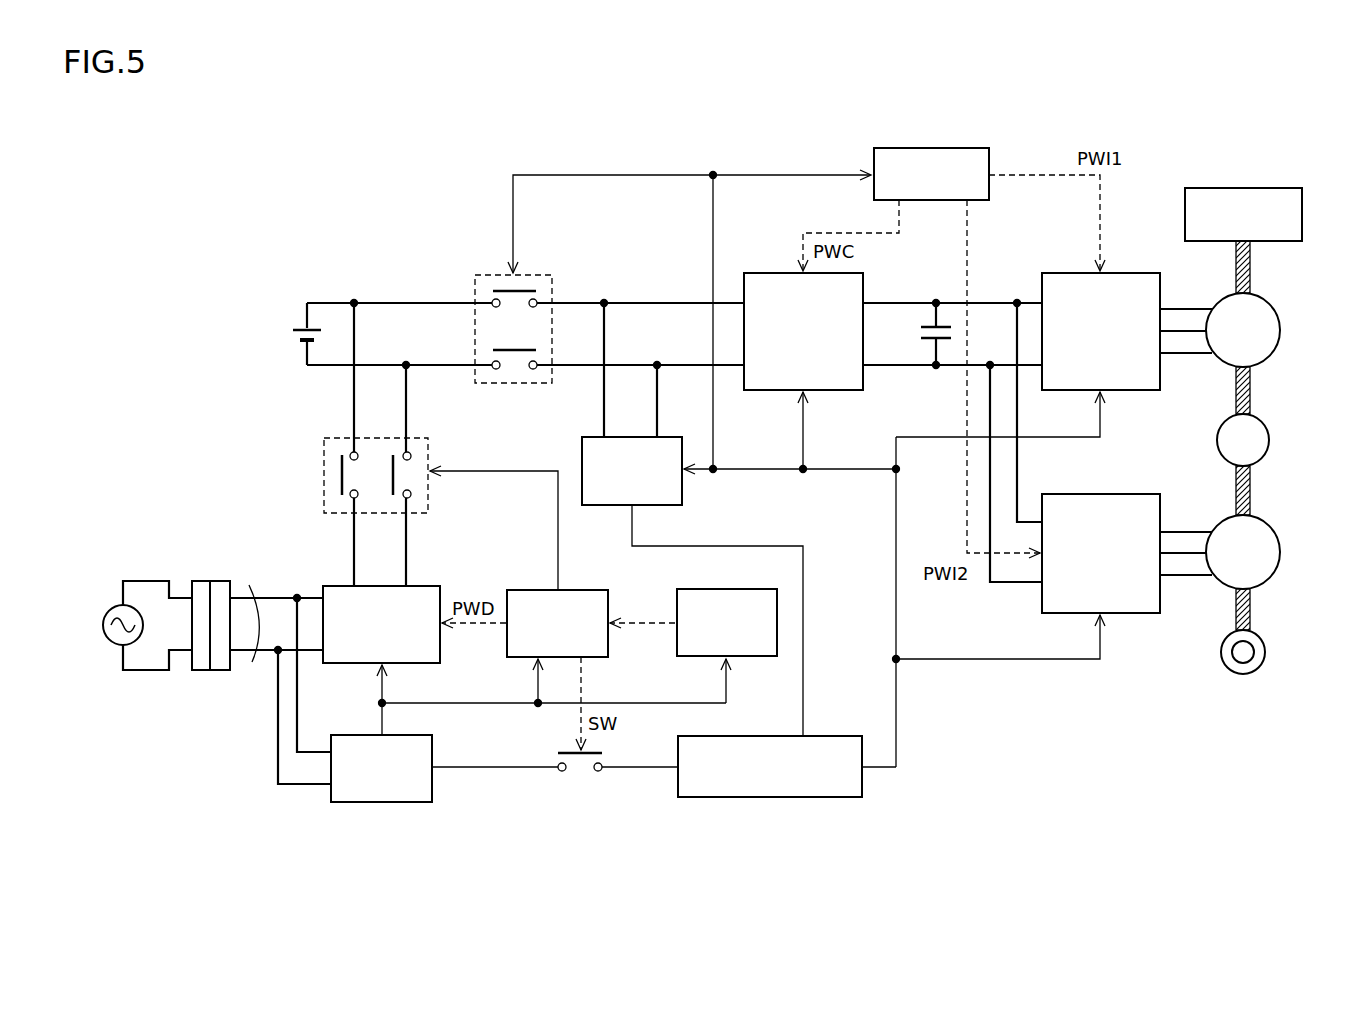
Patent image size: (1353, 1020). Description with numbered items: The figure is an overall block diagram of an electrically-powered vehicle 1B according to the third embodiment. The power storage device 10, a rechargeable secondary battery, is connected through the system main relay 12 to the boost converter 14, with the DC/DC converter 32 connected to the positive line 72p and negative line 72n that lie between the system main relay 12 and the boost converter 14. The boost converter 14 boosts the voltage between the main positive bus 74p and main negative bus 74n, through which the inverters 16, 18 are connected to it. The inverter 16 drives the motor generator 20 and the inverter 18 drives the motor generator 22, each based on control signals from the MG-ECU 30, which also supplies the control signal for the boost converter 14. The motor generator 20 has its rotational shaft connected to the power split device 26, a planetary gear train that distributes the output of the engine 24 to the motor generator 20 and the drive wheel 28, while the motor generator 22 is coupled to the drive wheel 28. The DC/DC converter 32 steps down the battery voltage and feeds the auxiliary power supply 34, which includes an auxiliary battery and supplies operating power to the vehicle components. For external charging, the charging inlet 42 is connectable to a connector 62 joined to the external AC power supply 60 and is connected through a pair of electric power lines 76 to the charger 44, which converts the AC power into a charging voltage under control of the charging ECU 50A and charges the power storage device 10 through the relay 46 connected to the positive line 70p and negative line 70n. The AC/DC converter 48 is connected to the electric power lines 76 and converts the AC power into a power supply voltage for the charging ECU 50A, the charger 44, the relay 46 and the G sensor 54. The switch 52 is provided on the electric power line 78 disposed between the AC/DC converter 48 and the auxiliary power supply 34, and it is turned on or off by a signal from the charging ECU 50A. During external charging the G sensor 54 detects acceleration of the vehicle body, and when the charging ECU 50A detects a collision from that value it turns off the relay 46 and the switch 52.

The electrically-powered vehicle 1B is at (318, 131).
The power storage device 10 is at (297, 330).
The system main relay 12 is at (490, 274).
The boost converter 14 is at (763, 273).
The inverter 16 is at (1127, 273).
The inverter 18 is at (1127, 494).
The motor generator 20 is at (1281, 331).
The motor generator 22 is at (1281, 553).
The engine 24 is at (1265, 188).
The power split device 26 is at (1270, 437).
The drive wheel 28 is at (1266, 652).
The MG-ECU 30 is at (953, 148).
The DC/DC converter 32 is at (660, 506).
The auxiliary power supply 34 is at (840, 736).
The charging inlet 42 is at (222, 581).
The charger 44 is at (424, 586).
The relay 46 is at (322, 461).
The AC/DC converter 48 is at (397, 803).
The charging ECU 50A is at (582, 590).
The switch 52 is at (582, 774).
The G sensor 54 is at (737, 589).
The AC power supply 60 is at (115, 610).
The connector 62 is at (200, 581).
The positive line 70p is at (377, 303).
The negative line 70n is at (377, 365).
The positive line 72p is at (631, 303).
The negative line 72n is at (631, 365).
The main positive bus 74p is at (996, 302).
The main negative bus 74n is at (910, 366).
The electric power lines 76 is at (252, 664).
The auxiliary power line 78 is at (897, 712).